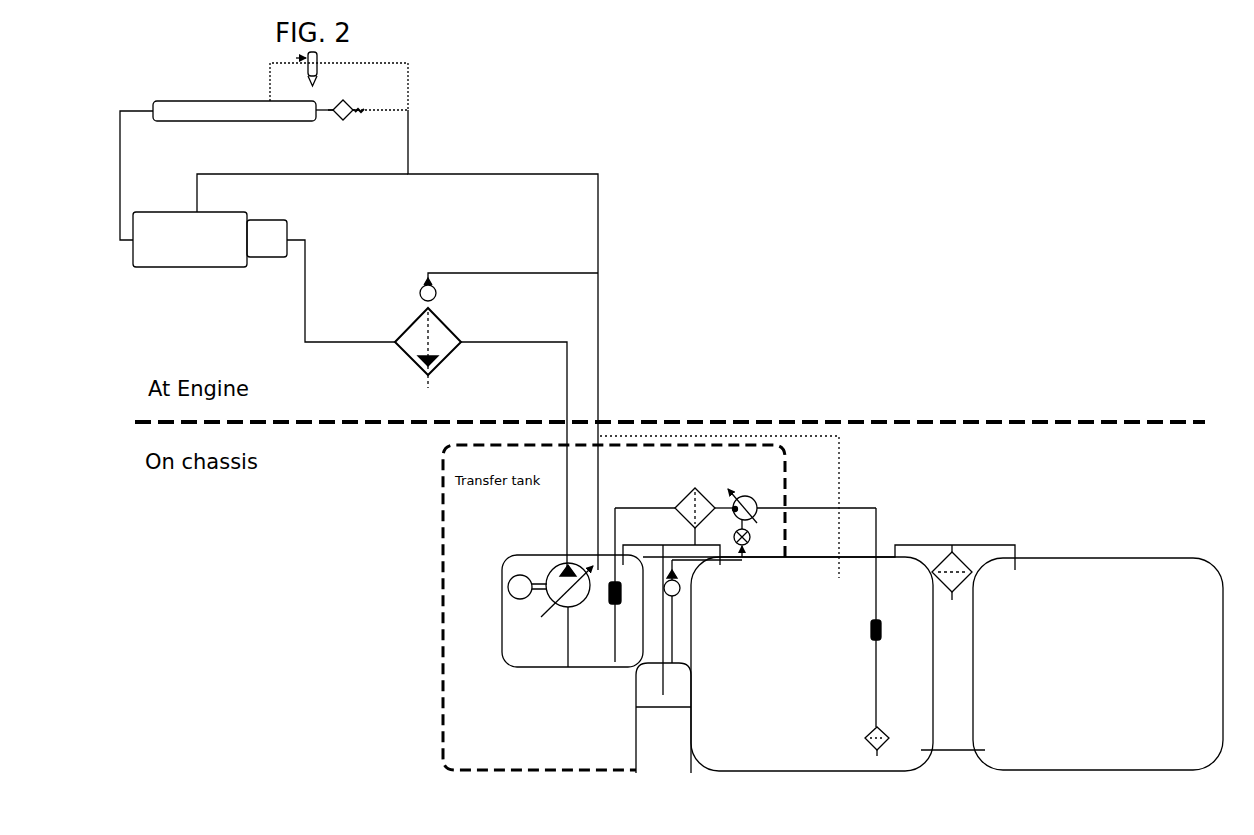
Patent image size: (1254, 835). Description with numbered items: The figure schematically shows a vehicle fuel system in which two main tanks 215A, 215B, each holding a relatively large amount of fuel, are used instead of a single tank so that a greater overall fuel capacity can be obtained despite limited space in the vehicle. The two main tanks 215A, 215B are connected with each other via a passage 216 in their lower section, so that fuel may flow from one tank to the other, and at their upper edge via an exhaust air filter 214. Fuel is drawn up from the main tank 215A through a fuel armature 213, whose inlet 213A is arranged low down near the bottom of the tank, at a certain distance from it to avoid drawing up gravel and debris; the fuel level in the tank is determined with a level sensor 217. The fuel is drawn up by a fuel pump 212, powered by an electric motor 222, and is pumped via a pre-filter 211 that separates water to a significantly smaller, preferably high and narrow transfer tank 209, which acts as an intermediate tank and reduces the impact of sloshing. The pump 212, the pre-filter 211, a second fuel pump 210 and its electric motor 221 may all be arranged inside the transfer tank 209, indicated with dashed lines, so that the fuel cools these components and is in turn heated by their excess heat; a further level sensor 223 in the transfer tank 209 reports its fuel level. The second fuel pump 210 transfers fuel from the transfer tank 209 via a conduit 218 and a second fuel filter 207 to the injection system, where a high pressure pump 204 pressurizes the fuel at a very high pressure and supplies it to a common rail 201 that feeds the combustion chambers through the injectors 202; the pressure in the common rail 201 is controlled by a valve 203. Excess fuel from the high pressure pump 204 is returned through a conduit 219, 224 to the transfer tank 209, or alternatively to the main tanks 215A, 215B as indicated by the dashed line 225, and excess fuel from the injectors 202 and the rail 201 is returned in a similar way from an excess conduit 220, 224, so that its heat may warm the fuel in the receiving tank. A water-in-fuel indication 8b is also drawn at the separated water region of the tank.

The common rail 201 is at (234, 105).
The injectors 202 is at (322, 64).
The valve 203 is at (357, 115).
The high pressure pump 204 is at (210, 249).
The second fuel filter 207 is at (437, 320).
The transfer tank 209 is at (509, 670).
The second fuel pump 210 is at (570, 615).
The pre-filter 211 is at (695, 507).
The fuel pump 212 is at (802, 498).
The fuel armature 213 is at (872, 673).
The inlet of the fuel armature 213A is at (862, 738).
The exhaust air filter 214 is at (952, 563).
The main tank 215A is at (812, 664).
The main tank 215B is at (1098, 664).
The passage 216 is at (970, 752).
The level sensor 217 is at (892, 617).
The conduit 218 is at (569, 390).
The conduit 219 is at (343, 178).
The excess conduit 220 is at (411, 152).
The electric motor 221 is at (507, 594).
The electric motor 222 is at (740, 552).
The level sensor 223 is at (623, 585).
The conduit 224 is at (602, 381).
The dashed line 225 is at (843, 462).
The water-in-fuel sensor / separated water 8b is at (708, 718).